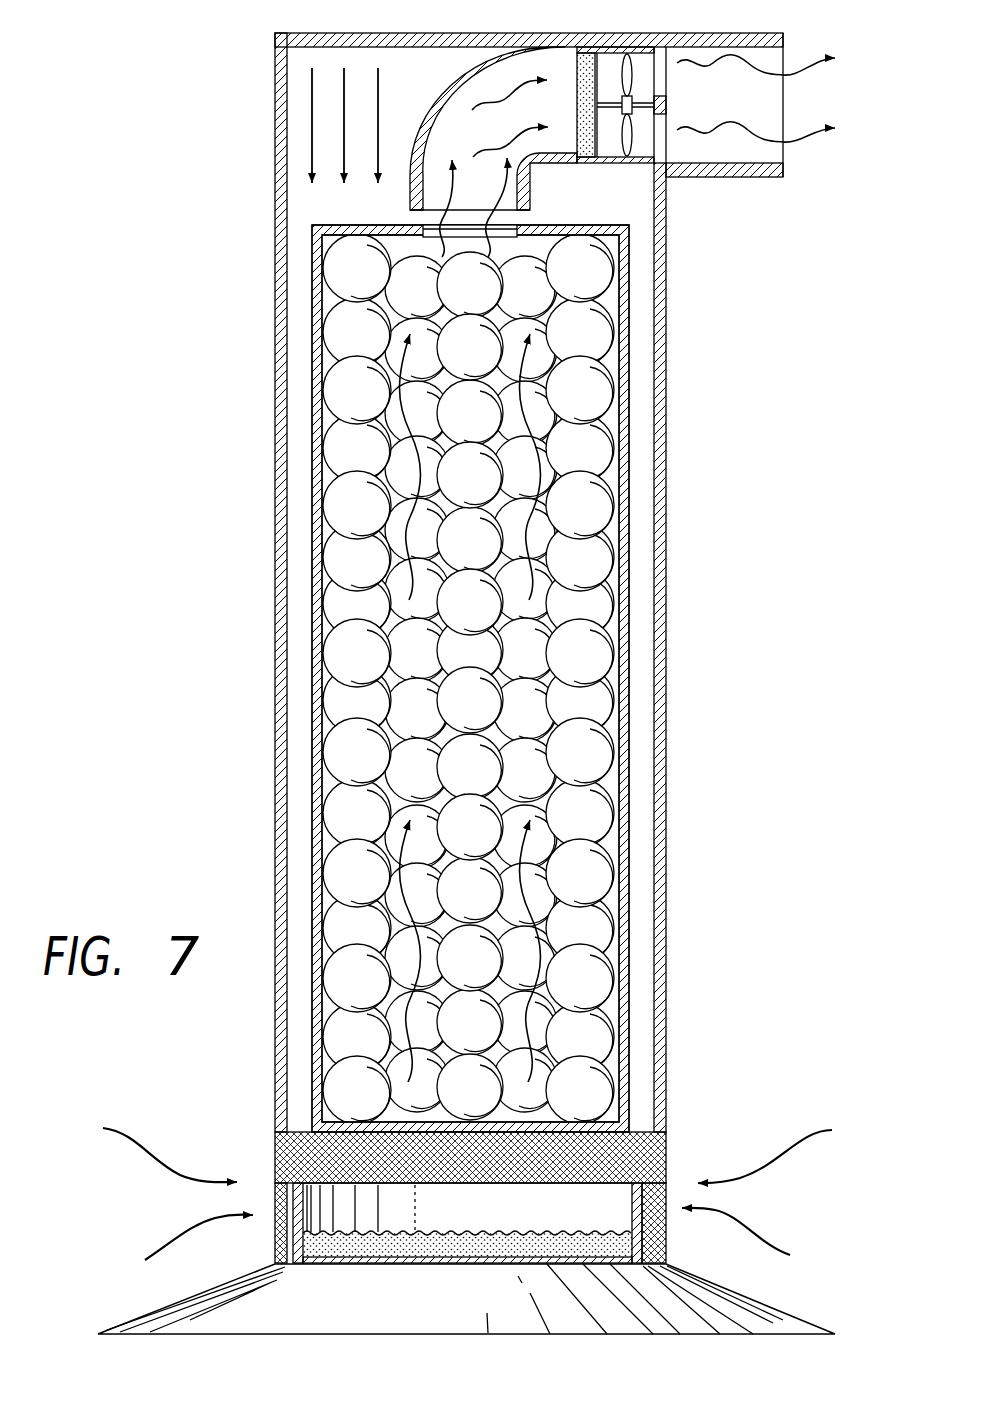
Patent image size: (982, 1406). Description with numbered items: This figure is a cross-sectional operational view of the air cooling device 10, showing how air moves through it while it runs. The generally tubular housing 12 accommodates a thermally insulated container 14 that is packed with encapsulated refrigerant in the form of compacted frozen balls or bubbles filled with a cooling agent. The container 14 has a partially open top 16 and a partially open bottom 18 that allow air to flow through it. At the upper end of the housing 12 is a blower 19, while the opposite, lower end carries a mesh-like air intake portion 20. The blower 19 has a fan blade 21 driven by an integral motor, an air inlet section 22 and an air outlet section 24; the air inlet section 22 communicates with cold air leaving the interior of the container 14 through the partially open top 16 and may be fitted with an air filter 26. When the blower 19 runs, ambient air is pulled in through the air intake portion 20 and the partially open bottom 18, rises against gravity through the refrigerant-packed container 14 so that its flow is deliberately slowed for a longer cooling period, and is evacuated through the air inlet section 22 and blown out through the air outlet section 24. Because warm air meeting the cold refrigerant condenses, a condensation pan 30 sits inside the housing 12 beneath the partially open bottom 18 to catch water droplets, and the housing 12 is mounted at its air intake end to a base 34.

The air cooling device 10 is at (193, 500).
The housing 12 is at (668, 385).
The thermally insulated container 14 is at (620, 672).
The partially open top 16 is at (503, 232).
The partially open bottom 18 is at (500, 1130).
The blower 19 is at (640, 50).
The mesh-like air intake portion 20 is at (622, 1158).
The fan blade 21 is at (632, 68).
The air inlet section 22 is at (460, 83).
The air outlet section 24 is at (737, 45).
The air filter 26 is at (577, 78).
The condensation pan 30 is at (613, 1222).
The base 34 is at (770, 1320).